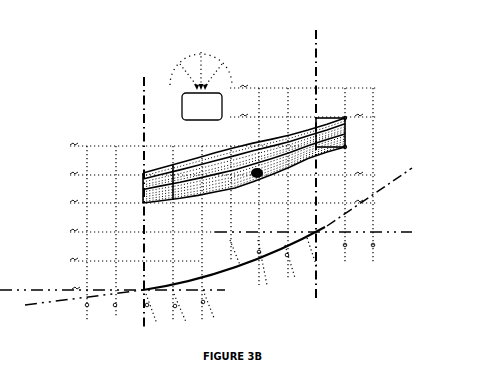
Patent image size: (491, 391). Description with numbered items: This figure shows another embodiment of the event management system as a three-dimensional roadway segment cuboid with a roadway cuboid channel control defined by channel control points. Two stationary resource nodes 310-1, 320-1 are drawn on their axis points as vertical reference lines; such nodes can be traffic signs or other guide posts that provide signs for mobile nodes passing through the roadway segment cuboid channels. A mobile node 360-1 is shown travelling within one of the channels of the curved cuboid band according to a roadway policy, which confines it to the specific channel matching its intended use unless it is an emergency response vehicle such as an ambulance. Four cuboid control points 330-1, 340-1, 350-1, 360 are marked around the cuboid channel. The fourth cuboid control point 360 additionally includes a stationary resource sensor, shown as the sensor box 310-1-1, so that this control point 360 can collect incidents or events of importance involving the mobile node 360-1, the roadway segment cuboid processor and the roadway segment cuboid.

The stationary resource node SRN-3A 310-1 is at (141, 191).
The stationary resource node SRN-3B 320-1 is at (316, 159).
The cuboid control point CCP-1 330-1 is at (249, 223).
The cuboid control point CCP-2 340-1 is at (345, 147).
The cuboid control point CCP-3 350-1 is at (345, 118).
The cuboid control point CCP-4 360 is at (201, 64).
The SRS sub-region segment 310-1-1 is at (202, 106).
The mobile node MN-1 360-1 is at (244, 160).